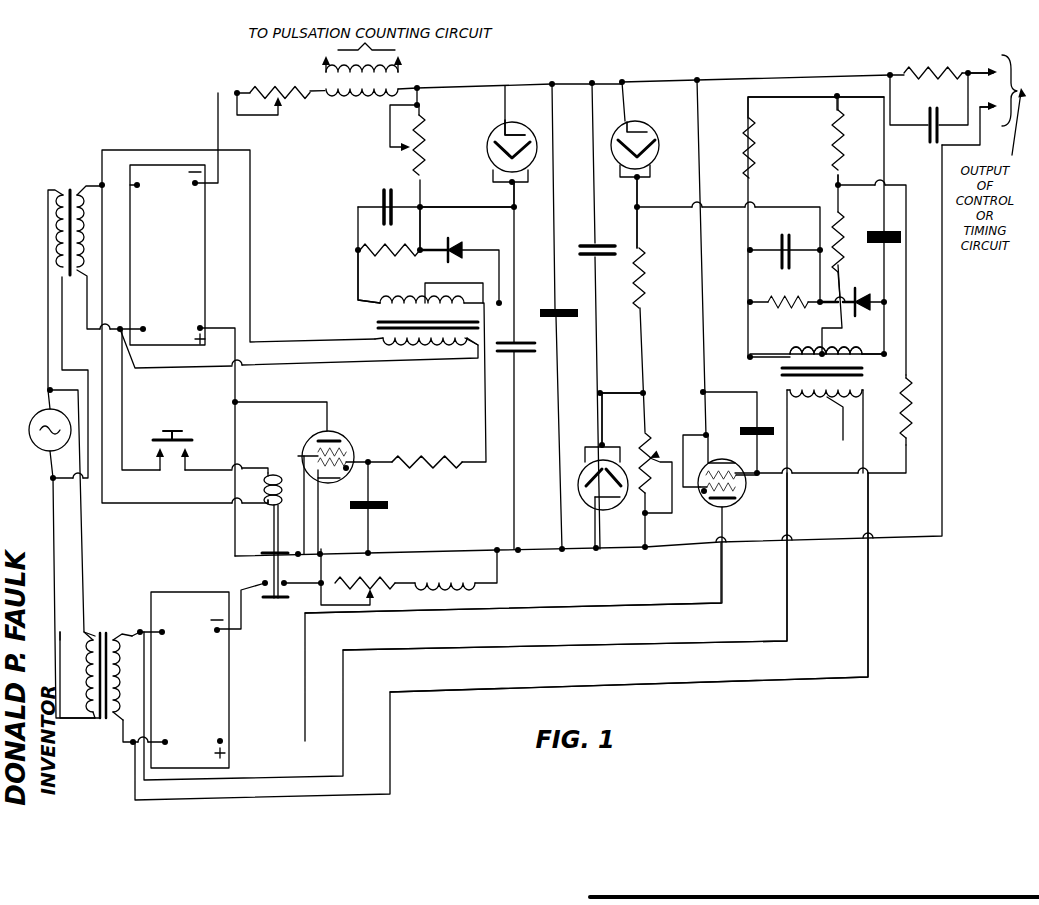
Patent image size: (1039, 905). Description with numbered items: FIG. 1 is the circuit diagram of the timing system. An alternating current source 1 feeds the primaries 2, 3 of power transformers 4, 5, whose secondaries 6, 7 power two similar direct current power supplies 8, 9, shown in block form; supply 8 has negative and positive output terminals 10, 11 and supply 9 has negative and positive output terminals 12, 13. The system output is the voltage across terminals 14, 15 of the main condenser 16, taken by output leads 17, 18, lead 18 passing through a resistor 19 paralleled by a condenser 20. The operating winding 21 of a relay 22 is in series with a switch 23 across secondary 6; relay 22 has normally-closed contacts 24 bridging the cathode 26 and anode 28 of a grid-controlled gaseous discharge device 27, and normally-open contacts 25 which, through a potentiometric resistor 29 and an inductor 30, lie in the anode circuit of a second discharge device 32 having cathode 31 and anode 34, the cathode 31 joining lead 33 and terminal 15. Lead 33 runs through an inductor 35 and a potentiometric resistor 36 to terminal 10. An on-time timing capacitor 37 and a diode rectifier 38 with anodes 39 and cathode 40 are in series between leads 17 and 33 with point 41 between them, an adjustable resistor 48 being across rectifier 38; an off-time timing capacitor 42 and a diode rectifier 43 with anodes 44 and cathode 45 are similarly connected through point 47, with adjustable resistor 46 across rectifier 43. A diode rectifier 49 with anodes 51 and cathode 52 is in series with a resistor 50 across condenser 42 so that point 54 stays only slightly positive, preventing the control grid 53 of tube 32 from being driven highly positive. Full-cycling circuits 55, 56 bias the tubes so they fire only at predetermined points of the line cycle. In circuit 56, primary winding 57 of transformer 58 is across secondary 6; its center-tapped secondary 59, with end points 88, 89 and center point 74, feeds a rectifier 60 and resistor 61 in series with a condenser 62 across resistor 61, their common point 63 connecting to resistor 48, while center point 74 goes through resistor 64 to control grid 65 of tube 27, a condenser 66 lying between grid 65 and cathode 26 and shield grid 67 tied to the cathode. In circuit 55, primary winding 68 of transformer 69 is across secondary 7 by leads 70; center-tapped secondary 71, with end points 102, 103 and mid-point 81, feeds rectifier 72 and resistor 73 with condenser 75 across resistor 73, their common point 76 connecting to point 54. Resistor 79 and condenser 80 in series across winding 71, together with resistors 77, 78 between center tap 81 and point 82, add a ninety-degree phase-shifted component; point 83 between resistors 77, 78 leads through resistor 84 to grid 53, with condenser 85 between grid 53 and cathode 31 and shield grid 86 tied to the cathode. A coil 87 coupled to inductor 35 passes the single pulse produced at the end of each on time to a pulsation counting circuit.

The source of alternating current line voltage 1 is at (29, 433).
The primary 2 is at (56, 228).
The primary 3 is at (86, 654).
The power transformer 4 is at (72, 190).
The power transformer 5 is at (104, 631).
The secondary 6 is at (82, 234).
The secondary 7 is at (126, 694).
The direct current power supply 8 is at (145, 168).
The direct current power supply 9 is at (168, 600).
The negative output terminal 10 is at (198, 186).
The positive output terminal 11 is at (197, 329).
The negative output terminal 12 is at (213, 628).
The positive output terminal 13 is at (215, 743).
The terminal 14 is at (323, 556).
The terminal 15 is at (622, 82).
The main condenser 16 is at (575, 306).
The lead 17 is at (631, 548).
The lead 18 is at (976, 68).
The resistor 19 is at (916, 66).
The condenser 20 is at (940, 110).
The operating winding 21 is at (265, 474).
The relay 22 is at (260, 523).
The switch 23 is at (172, 450).
The normally-closed contacts 24 is at (268, 555).
The normally-open contacts 25 is at (283, 601).
The cathode 26 is at (330, 479).
The grid-controlled gaseous discharge device 27 is at (353, 452).
The anode 28 is at (336, 439).
The potentiometric resistor 29 is at (376, 581).
The inductor 30 is at (444, 580).
The cathode 31 is at (719, 458).
The second grid-controlled gaseous discharge device 32 is at (739, 491).
The lead 33 is at (448, 88).
The anode 34 is at (729, 503).
The inductor 35 is at (355, 96).
The potentiometric resistor 36 is at (278, 88).
The on time timing capacitor 37 is at (531, 352).
The diode rectifier 38 is at (492, 137).
The anodes 39 is at (530, 143).
The cathode 40 is at (511, 122).
The point 41 is at (515, 207).
The off time timing capacitor 42 is at (590, 245).
The diode rectifier 43 is at (579, 495).
The anodes 44 is at (603, 474).
The cathode 45 is at (616, 498).
The adjustable resistor 46 is at (656, 441).
The point 47 is at (599, 396).
The adjustable resistor 48 is at (426, 132).
The diode rectifier 49 is at (656, 134).
The resistor 50 is at (650, 271).
The anodes 51 is at (652, 158).
The cathode 52 is at (638, 122).
The control grid 53 is at (739, 470).
The point 54 is at (636, 209).
The full-cycling circuit 55 is at (778, 171).
The full-cycling circuit 56 is at (375, 284).
The primary winding 57 is at (426, 346).
The transformer 58 is at (378, 326).
The center-tapped secondary 59 is at (466, 294).
The rectifier 60 is at (456, 241).
The resistor 61 is at (392, 246).
The condenser 62 is at (388, 190).
The point 63 is at (422, 248).
The resistor 64 is at (419, 470).
The control grid 65 is at (317, 462).
The condenser 66 is at (389, 508).
The shield grid 67 is at (320, 452).
The primary winding 68 is at (825, 424).
The transformer 69 is at (864, 371).
The leads 70 is at (478, 690).
The center-tapped secondary 71 is at (849, 353).
The rectifier 72 is at (862, 293).
The resistor 73 is at (785, 311).
The center point 74 is at (424, 304).
The condenser 75 is at (782, 241).
The point 76 is at (818, 298).
The resistor 77 is at (843, 238).
The resistor 78 is at (846, 150).
The resistor 79 is at (754, 161).
The condenser 80 is at (902, 241).
The mid-point 81 is at (821, 353).
The point 82 is at (839, 94).
The point 83 is at (841, 184).
The resistor 84 is at (909, 410).
The condenser 85 is at (775, 431).
The shield grid 86 is at (704, 497).
The coil 87 is at (362, 57).
The end point 88 is at (512, 336).
The end point 89 is at (357, 301).
The point 102 is at (749, 358).
The point 103 is at (886, 353).